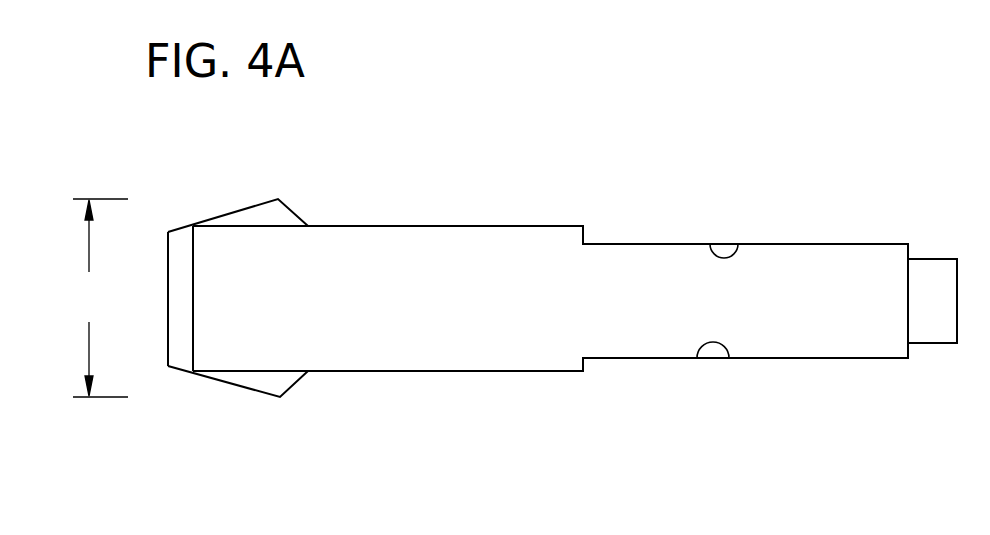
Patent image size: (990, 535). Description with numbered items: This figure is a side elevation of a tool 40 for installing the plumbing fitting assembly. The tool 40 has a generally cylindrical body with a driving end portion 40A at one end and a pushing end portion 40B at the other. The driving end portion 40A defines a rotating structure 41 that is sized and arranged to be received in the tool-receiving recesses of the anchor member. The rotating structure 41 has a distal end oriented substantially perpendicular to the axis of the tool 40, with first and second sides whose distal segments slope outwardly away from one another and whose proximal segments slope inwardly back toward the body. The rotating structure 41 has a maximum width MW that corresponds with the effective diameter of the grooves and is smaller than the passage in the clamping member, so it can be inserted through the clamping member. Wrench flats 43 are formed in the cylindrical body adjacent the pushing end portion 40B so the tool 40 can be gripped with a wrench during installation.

The tool 40 is at (498, 403).
The driving end portion 40A is at (210, 357).
The pushing end portion 40B is at (893, 262).
The rotating structure 41 is at (240, 218).
The wrench flats 43 is at (733, 243).
The maximum width MW is at (96, 298).